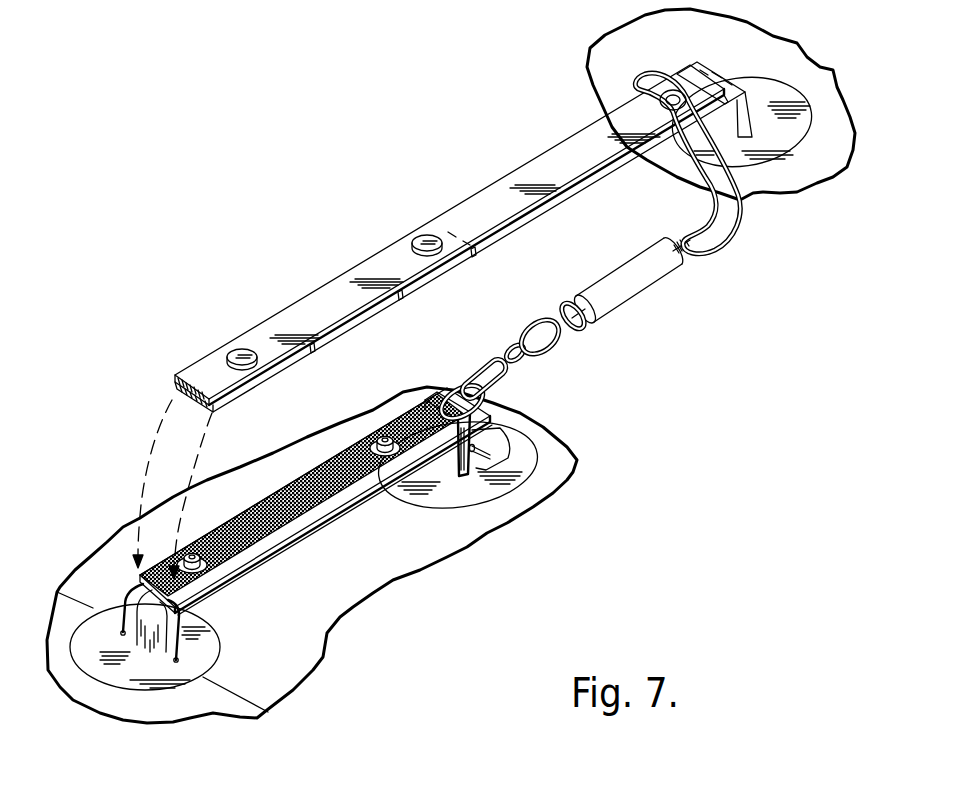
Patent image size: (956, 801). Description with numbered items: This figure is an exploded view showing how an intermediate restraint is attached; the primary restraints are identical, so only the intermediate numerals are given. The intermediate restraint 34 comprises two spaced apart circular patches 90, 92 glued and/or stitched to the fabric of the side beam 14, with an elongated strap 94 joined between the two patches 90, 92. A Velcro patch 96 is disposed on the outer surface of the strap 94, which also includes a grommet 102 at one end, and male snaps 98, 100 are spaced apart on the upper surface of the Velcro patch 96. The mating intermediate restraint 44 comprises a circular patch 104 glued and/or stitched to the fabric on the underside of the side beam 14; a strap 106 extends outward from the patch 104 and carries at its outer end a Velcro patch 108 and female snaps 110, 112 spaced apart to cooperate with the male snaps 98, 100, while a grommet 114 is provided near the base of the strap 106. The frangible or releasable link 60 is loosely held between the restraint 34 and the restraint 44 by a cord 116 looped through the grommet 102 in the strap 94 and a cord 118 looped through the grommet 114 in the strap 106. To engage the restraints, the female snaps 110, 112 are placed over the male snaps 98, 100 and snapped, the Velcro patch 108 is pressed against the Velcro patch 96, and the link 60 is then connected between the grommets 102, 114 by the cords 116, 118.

The side beam 14 is at (803, 193).
The intermediate restraint 34 is at (306, 525).
The intermediate restraint 44 is at (451, 238).
The frangible or releasable link 60 is at (660, 285).
The circular patch 90 is at (217, 648).
The circular patch 92 is at (413, 500).
The elongated strap 94 is at (273, 549).
The Velcro patch 96 is at (304, 476).
The male snap 98 is at (192, 551).
The male snap 100 is at (372, 438).
The grommet 102 is at (433, 397).
The circular patch 104 is at (805, 132).
The strap 106 is at (463, 203).
The Velcro patch 108 is at (363, 320).
The female snap 110 is at (270, 356).
The female snap 112 is at (410, 243).
The grommet 114 is at (673, 84).
The cord 116 is at (548, 357).
The cord 118 is at (740, 217).